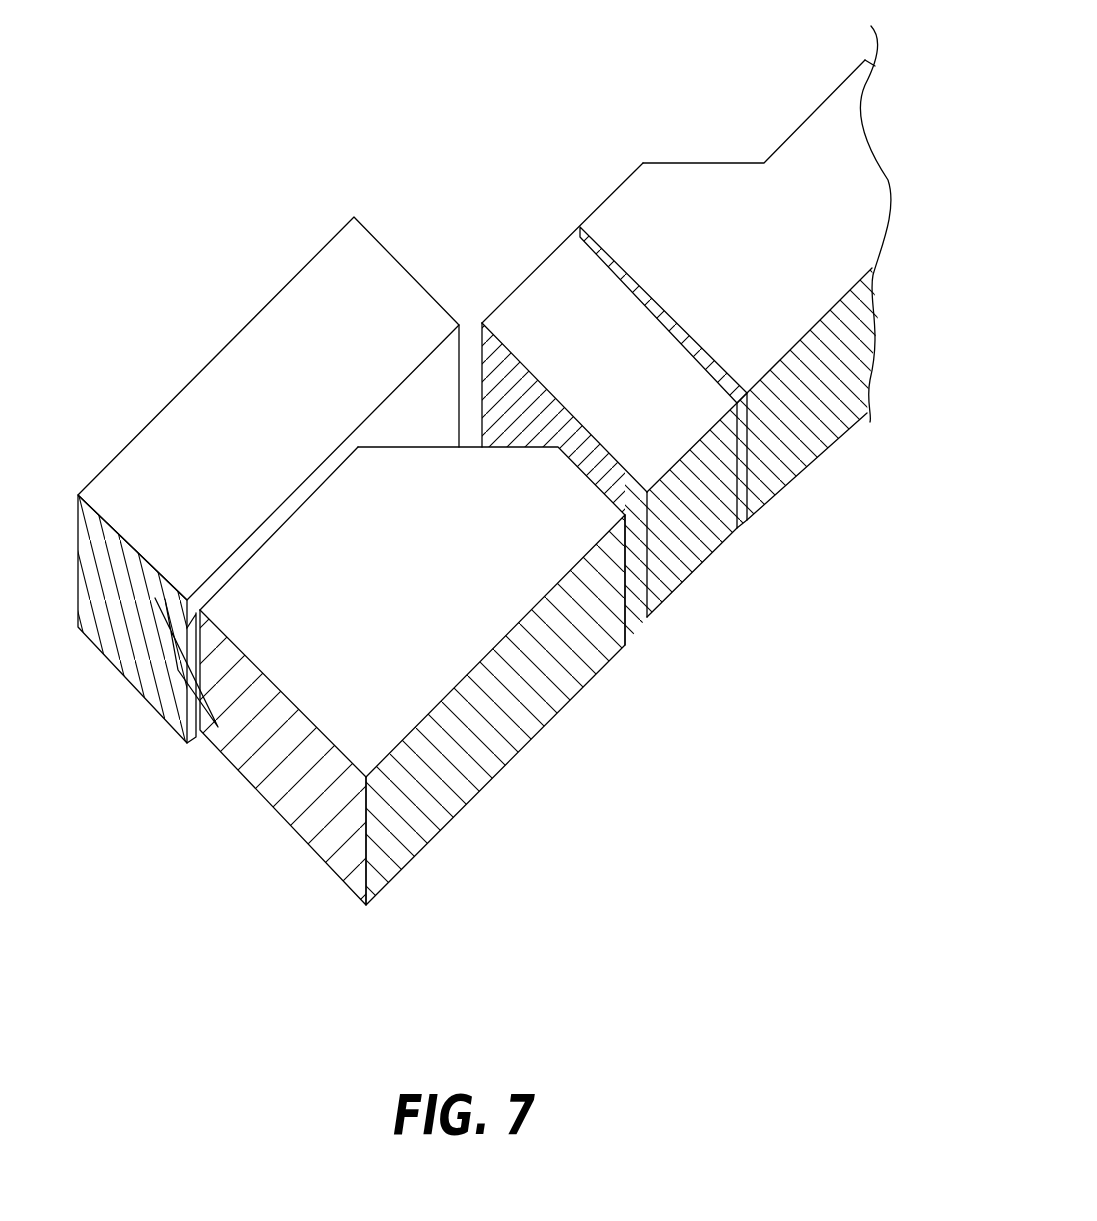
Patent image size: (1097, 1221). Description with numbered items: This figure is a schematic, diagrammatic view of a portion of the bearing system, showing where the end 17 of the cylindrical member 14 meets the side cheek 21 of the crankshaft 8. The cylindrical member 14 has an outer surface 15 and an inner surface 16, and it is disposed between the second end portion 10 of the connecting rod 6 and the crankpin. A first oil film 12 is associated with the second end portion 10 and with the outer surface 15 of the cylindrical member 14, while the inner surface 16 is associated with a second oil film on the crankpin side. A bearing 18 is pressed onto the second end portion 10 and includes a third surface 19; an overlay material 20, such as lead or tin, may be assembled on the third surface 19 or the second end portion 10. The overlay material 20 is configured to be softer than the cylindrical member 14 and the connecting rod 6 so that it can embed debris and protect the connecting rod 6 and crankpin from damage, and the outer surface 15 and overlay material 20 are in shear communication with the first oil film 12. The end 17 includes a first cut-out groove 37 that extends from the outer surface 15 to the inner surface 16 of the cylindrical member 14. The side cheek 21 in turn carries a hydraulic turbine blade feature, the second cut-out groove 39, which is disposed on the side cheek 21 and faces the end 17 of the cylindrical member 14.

The connecting rod 6 is at (708, 244).
The crankshaft 8 is at (305, 332).
The second end portion 10 is at (627, 158).
The first oil film 12 is at (636, 563).
The cylindrical member 14 is at (400, 688).
The outer surface 15 is at (595, 482).
The inner surface 16 is at (240, 652).
The end 17 is at (249, 556).
The bearing 18 is at (677, 423).
The third surface 19 is at (513, 356).
The overlay material 20 is at (605, 472).
The side cheek 21 is at (436, 352).
The first cut-out groove 37 is at (198, 693).
The second cut-out groove 39 is at (175, 617).